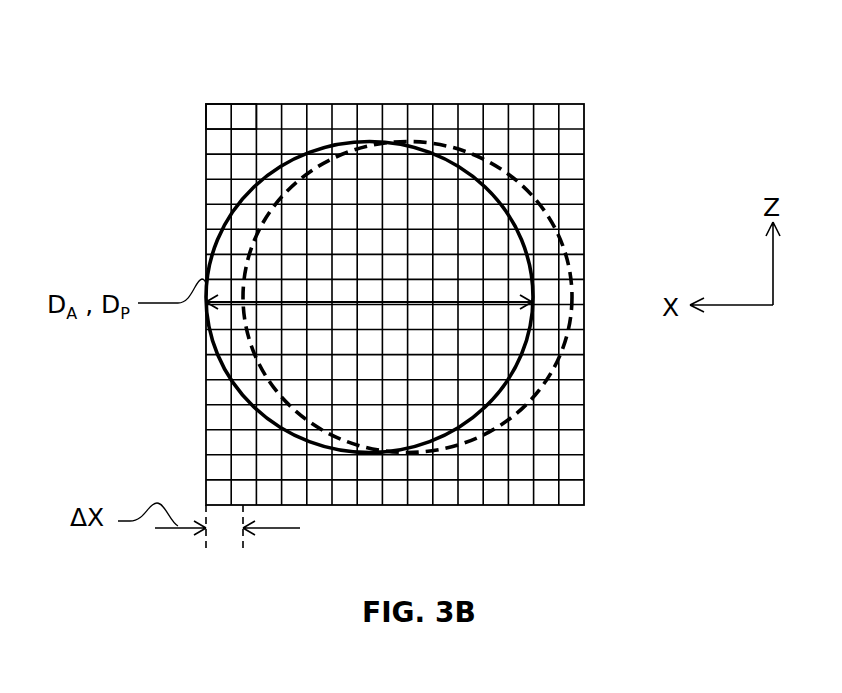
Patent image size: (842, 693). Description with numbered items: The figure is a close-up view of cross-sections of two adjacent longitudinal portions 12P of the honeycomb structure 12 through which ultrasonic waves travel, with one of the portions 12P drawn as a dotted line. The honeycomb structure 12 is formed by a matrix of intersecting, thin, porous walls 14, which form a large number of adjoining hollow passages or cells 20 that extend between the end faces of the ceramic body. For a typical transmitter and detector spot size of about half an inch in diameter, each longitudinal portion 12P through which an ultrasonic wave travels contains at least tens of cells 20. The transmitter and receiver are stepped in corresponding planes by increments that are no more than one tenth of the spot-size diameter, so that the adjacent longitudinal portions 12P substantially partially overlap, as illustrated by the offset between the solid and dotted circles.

The honeycomb structure 12 is at (180, 164).
The walls 14 is at (385, 122).
The cells 20 is at (245, 112).
The longitudinal portions 12P is at (214, 227).